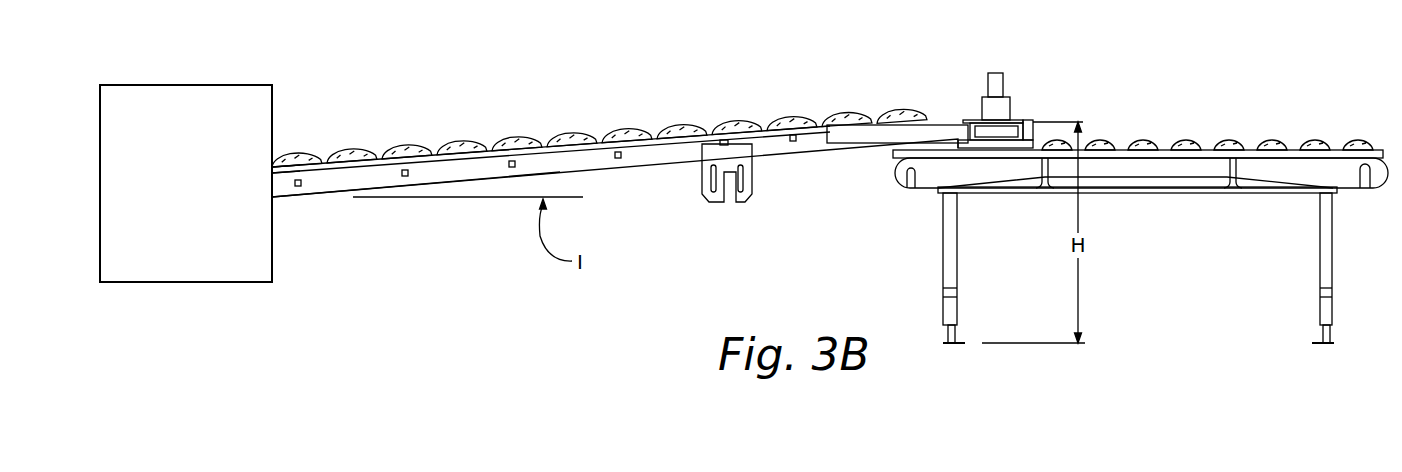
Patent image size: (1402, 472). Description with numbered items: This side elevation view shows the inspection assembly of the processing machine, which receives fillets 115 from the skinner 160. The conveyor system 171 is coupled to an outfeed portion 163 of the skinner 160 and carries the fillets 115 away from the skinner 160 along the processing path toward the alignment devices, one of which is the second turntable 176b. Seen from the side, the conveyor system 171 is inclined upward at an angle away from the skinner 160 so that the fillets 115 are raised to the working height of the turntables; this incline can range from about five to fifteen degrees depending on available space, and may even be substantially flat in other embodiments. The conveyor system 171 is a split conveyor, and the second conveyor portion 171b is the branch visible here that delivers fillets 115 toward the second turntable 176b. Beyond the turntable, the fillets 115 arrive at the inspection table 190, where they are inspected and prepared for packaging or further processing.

The skinner 160 is at (206, 191).
The outfeed portion 163 is at (282, 146).
The conveyor system 171 is at (545, 122).
The second conveyor portion 171b is at (598, 162).
The fillets 115 is at (463, 140).
The second turntable 176b is at (1030, 94).
The inspection table 190 is at (1247, 120).